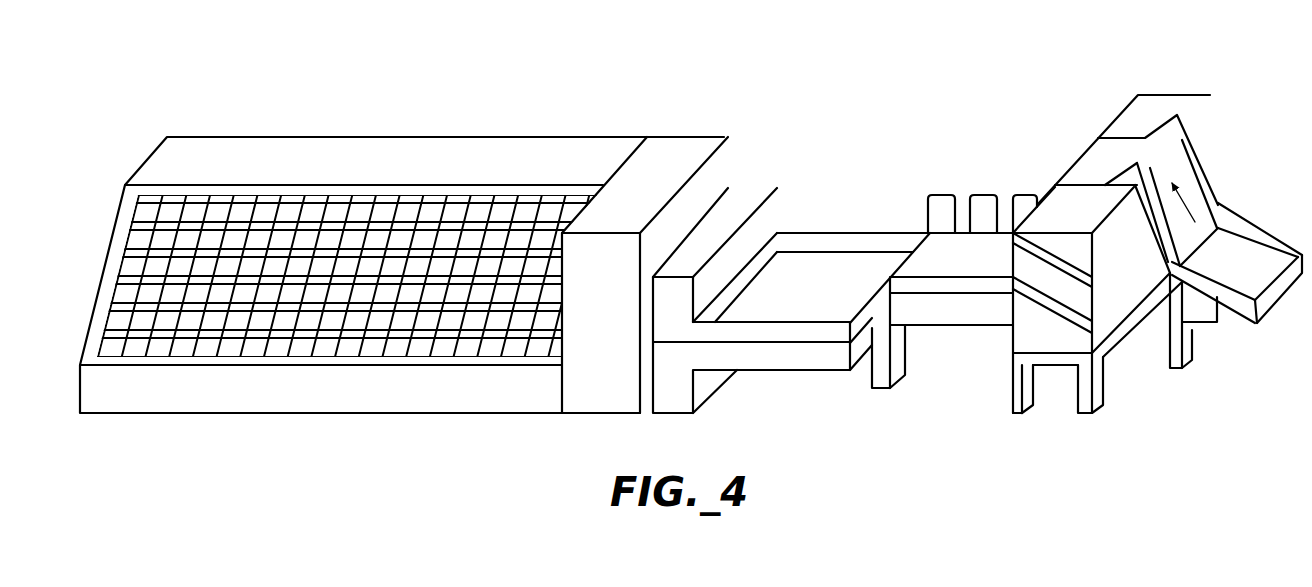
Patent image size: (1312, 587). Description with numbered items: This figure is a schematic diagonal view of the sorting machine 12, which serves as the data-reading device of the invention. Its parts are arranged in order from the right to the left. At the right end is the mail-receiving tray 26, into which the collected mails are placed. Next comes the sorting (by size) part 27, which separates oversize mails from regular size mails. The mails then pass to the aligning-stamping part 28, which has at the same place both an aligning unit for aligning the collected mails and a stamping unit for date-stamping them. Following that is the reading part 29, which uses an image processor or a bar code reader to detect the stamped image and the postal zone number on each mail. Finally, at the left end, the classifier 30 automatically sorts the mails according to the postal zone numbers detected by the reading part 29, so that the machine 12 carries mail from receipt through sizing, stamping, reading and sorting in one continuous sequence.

The sorting machine 12 is at (505, 70).
The mail-receiving tray 26 is at (1227, 243).
The sorting (by size) part 27 is at (1125, 123).
The aligning-stamping part 28 is at (807, 272).
The reading part 29 is at (668, 147).
The classifier 30 is at (292, 148).